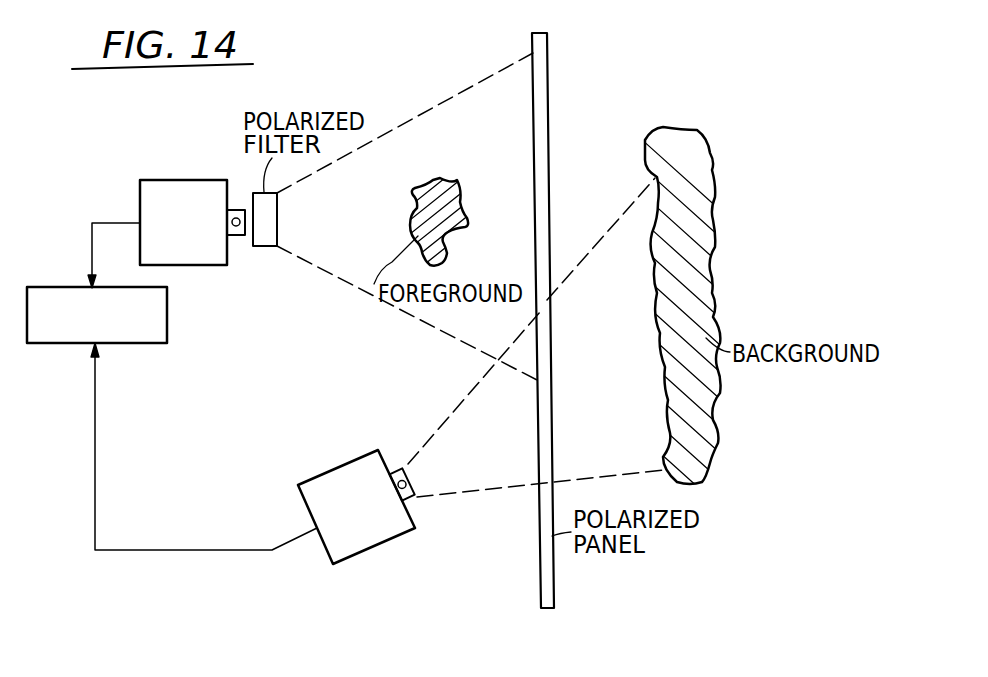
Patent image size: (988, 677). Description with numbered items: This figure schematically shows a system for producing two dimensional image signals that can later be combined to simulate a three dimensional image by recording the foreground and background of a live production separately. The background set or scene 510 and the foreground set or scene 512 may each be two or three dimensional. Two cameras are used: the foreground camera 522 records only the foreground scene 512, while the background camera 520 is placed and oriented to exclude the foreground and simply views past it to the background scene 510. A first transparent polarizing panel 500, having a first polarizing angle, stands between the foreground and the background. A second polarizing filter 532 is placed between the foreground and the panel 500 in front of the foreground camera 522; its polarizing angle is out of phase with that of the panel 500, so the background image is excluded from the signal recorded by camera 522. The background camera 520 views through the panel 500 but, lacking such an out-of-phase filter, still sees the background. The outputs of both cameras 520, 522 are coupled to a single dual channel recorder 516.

The first transparent polarizing filter or panel 500 is at (552, 320).
The background set or scene 510 is at (716, 258).
The foreground set or scene 512 is at (445, 178).
The dual channel recorder 516 is at (64, 287).
The background camera 520 is at (344, 462).
The foreground camera 522 is at (207, 181).
The second polarizing filter 532 is at (276, 250).